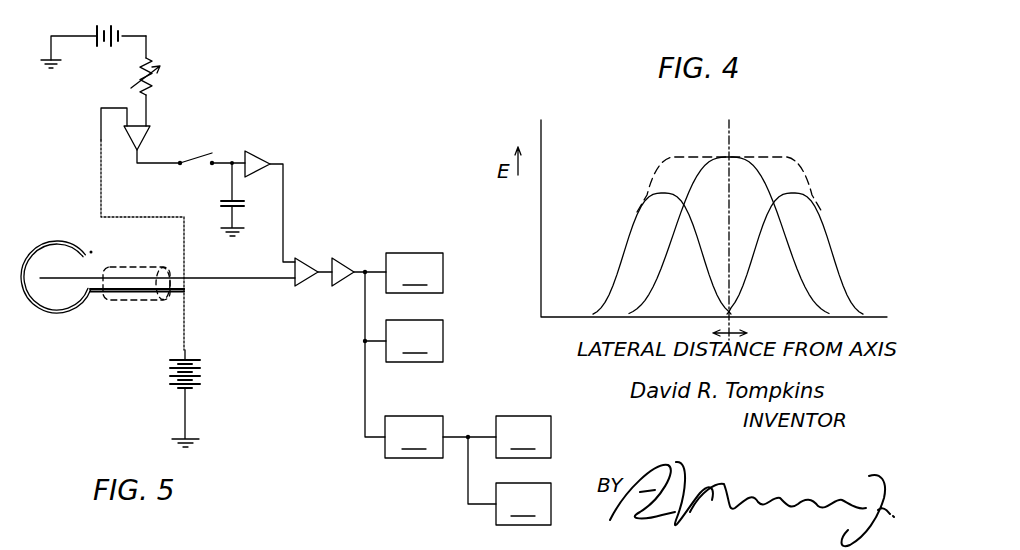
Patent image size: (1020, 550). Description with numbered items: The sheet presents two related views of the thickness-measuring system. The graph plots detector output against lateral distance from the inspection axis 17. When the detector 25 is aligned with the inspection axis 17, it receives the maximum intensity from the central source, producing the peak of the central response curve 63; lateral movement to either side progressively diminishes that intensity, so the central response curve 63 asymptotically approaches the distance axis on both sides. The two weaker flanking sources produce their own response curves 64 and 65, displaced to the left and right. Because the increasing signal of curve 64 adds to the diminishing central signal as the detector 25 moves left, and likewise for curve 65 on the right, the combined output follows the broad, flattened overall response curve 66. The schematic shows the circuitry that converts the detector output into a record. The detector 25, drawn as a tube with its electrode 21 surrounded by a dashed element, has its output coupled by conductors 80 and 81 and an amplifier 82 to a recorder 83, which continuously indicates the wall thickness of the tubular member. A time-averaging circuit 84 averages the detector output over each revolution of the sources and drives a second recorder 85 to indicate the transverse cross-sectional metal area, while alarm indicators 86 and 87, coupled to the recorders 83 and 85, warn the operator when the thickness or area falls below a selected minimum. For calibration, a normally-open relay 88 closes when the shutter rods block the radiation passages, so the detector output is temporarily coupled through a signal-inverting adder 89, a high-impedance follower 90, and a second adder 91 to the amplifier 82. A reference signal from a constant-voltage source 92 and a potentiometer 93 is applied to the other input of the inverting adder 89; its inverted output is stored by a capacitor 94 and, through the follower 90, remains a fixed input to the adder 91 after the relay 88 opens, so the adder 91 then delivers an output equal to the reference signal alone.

In FIG. 4, the inspection axis 17 is at (733, 135).
In FIG. 5, the electrode 21 is at (118, 301).
In FIG. 5, the detector 25 is at (158, 254).
In FIG. 4, the central response curve 63 is at (692, 181).
In FIG. 4, the response curve 64 is at (629, 238).
In FIG. 4, the response curve 65 is at (833, 240).
In FIG. 4, the overall response curve 66 is at (660, 170).
In FIG. 5, the conductor 80 is at (185, 281).
In FIG. 5, the conductor 81 is at (189, 345).
In FIG. 5, the amplifier 82 is at (345, 257).
In FIG. 5, the recorder 83 is at (414, 273).
In FIG. 5, the time-averaging circuit 84 is at (440, 460).
In FIG. 5, the recorder 85 is at (523, 437).
In FIG. 5, the alarm indicator 86 is at (414, 341).
In FIG. 5, the alarm indicator 87 is at (523, 504).
In FIG. 5, the normally-open relay 88 is at (205, 150).
In FIG. 5, the adder 89 is at (150, 135).
In FIG. 5, the follower 90 is at (262, 152).
In FIG. 5, the adder 91 is at (304, 287).
In FIG. 5, the constant-voltage source 92 is at (120, 31).
In FIG. 5, the potentiometer 93 is at (162, 82).
In FIG. 5, the capacitor 94 is at (221, 194).